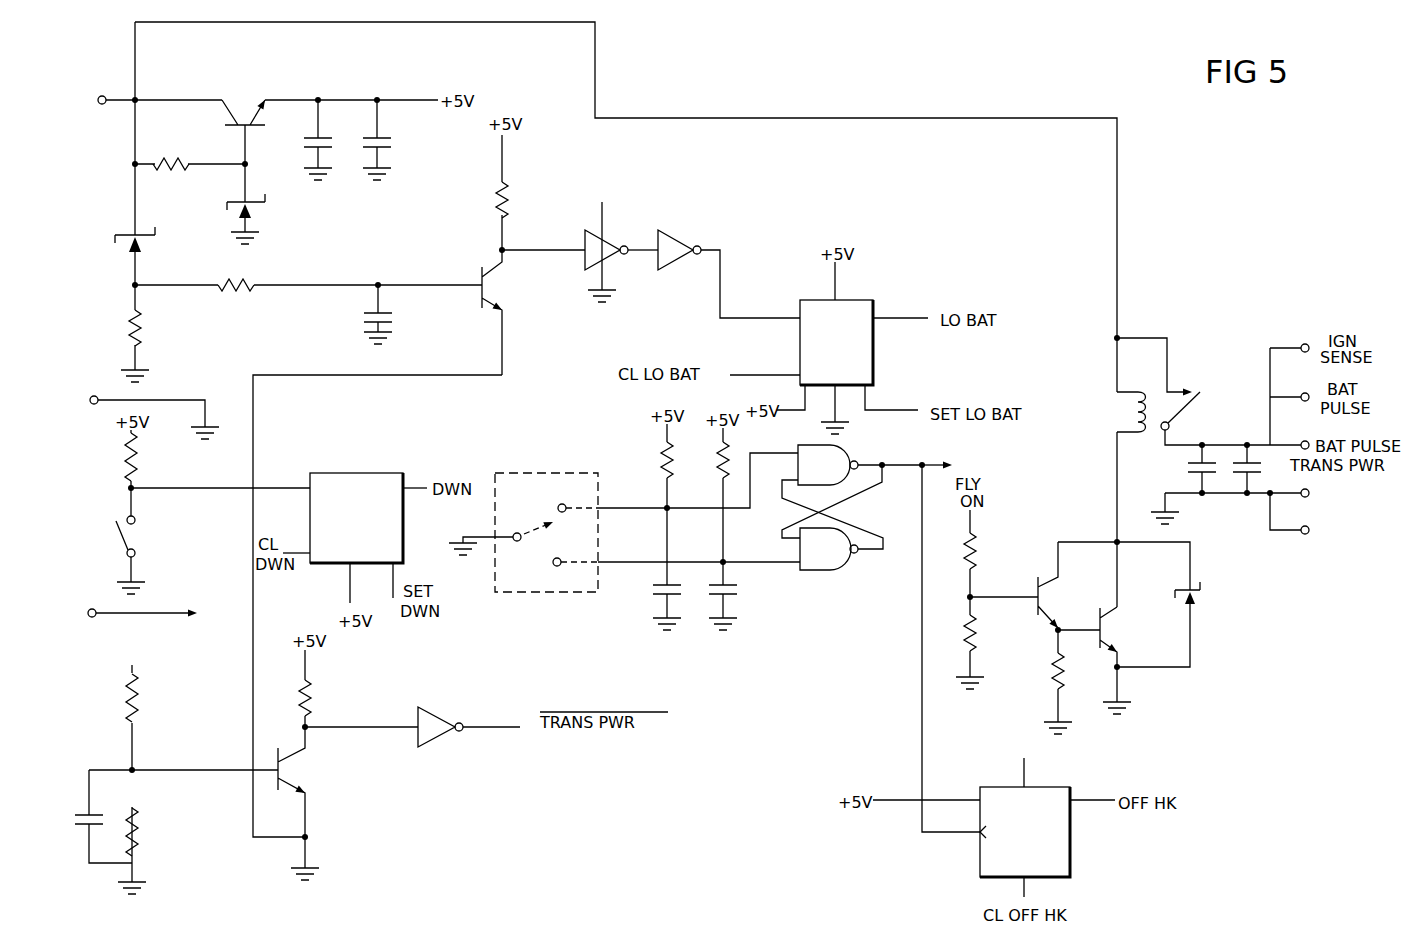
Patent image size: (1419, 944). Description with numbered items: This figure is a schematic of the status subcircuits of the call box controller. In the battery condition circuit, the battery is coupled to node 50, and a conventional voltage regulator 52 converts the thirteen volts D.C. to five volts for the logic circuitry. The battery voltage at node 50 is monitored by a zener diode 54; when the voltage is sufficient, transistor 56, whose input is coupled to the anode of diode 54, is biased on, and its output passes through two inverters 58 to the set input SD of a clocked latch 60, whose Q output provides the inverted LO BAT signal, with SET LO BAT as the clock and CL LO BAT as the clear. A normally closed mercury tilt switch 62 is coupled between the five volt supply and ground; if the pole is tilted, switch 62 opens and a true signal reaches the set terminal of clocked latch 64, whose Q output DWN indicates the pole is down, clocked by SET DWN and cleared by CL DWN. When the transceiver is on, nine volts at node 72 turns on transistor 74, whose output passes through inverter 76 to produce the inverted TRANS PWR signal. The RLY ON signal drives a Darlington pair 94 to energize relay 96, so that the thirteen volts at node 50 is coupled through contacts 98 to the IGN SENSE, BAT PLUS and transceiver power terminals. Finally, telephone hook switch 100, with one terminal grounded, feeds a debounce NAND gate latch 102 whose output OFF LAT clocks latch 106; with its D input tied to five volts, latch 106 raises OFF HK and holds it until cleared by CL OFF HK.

The node 50 is at (140, 97).
The voltage regulator 52 is at (300, 90).
The zener diode 54 is at (138, 268).
The transistor 56 is at (480, 272).
The inverters 58 is at (630, 236).
The clocked latch 60 is at (848, 312).
The mercury tilt switch 62 is at (128, 462).
The clocked latch 64 is at (380, 447).
The node 72 is at (140, 613).
The transistor 74 is at (302, 776).
The inverter 76 is at (458, 696).
The Darlington pair 94 is at (1085, 545).
The relay 96 is at (1145, 392).
The contacts 98 is at (1198, 392).
The telephone hook switch 100 is at (578, 452).
The debounce NAND gate latch 102 is at (848, 579).
The clocked latch 106 is at (1072, 850).